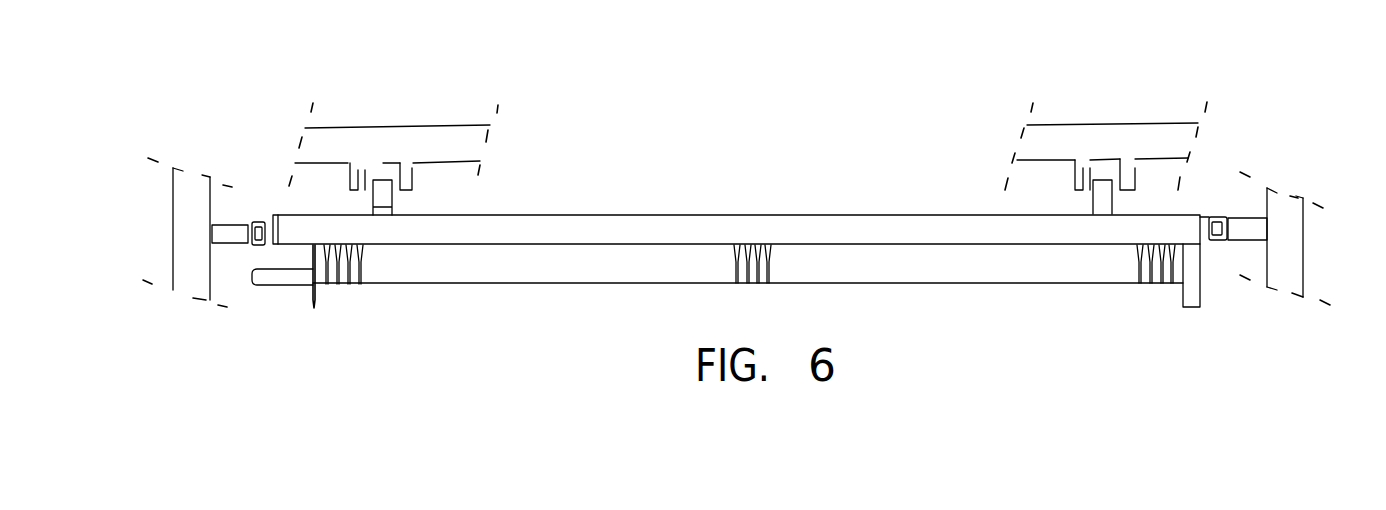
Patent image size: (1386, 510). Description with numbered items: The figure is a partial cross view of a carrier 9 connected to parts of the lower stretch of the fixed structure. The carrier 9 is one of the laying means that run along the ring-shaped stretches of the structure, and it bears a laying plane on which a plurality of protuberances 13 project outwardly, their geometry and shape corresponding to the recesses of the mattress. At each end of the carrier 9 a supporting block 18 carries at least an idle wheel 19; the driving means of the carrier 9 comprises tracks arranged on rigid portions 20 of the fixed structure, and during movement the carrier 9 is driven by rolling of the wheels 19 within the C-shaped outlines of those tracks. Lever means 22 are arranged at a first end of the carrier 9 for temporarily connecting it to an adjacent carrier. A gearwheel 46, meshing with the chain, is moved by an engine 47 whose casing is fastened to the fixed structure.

The carrier 9 is at (781, 200).
The protuberances 13 is at (770, 268).
The supporting block 18 is at (370, 203).
The idle wheel 19 is at (400, 190).
The rigid portions 20 is at (410, 175).
The lever means 22 is at (369, 178).
The gearwheel 46 is at (255, 246).
The engine 47 is at (221, 222).